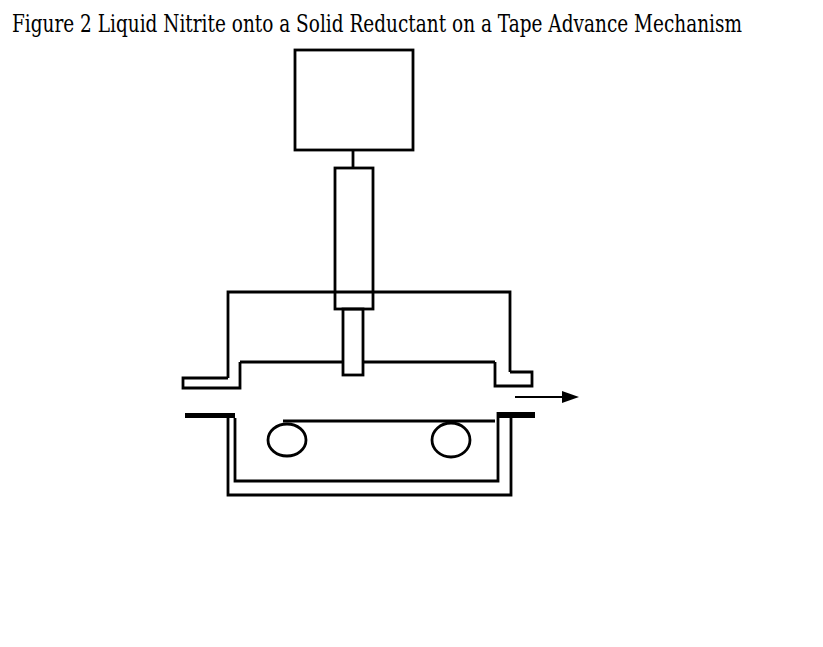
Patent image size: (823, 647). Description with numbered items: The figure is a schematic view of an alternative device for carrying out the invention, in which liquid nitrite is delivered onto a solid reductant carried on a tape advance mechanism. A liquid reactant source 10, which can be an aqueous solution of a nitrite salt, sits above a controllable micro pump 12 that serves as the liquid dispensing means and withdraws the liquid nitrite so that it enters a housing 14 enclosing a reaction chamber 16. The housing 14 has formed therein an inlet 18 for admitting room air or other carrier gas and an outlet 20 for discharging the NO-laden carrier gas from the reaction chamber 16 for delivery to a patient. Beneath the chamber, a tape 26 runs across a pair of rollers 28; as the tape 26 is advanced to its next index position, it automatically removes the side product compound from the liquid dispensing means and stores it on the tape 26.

The liquid reactant source 10 is at (412, 120).
The micro pump 12 is at (353, 208).
The housing 14 is at (487, 290).
The reaction chamber 16 is at (453, 392).
The inlet 18 is at (185, 378).
The outlet 20 is at (535, 415).
The tape 26 is at (365, 421).
The roller 28 is at (293, 422).